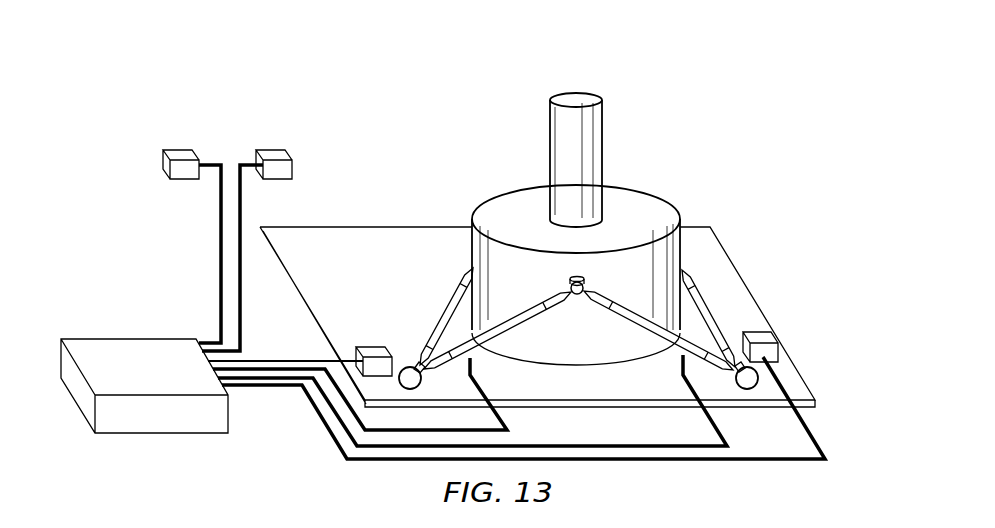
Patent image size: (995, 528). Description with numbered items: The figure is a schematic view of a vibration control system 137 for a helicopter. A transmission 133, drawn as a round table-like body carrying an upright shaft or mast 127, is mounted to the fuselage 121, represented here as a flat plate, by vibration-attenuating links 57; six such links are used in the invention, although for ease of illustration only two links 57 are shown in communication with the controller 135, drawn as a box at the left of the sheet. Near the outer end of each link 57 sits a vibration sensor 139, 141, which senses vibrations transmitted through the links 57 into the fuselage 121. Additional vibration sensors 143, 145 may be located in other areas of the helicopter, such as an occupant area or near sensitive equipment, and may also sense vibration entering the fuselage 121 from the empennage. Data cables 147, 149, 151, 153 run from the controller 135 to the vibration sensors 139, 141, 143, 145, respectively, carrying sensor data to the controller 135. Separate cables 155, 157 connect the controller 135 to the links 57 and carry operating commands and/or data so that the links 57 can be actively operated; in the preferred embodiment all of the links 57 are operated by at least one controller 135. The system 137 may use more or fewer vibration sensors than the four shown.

The vibration control system 137 is at (395, 108).
The fuselage 121 is at (385, 240).
The transmission 133 is at (505, 208).
The cylindrical column 127 is at (603, 150).
The vibration-attenuating links 57 is at (523, 310).
The controller 135 is at (162, 434).
The vibration sensor 145 is at (175, 149).
The vibration sensor 143 is at (272, 149).
The vibration sensor 141 is at (374, 346).
The vibration sensor 139 is at (758, 333).
The data cable 153 is at (218, 257).
The data cable 151 is at (240, 214).
The data cable 149 is at (289, 358).
The cable 157 is at (511, 430).
The cable 155 is at (725, 436).
The data cable 147 is at (775, 459).